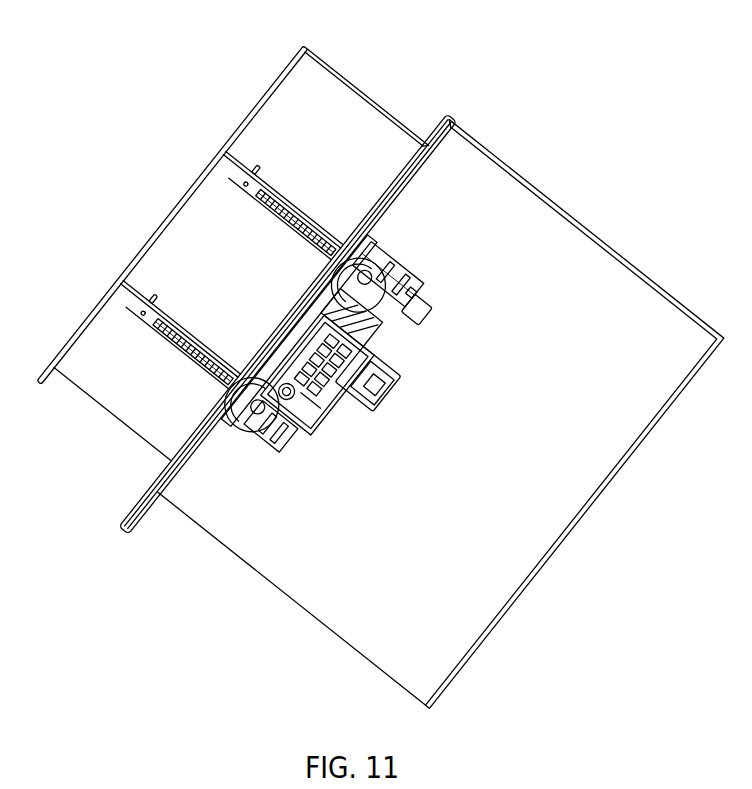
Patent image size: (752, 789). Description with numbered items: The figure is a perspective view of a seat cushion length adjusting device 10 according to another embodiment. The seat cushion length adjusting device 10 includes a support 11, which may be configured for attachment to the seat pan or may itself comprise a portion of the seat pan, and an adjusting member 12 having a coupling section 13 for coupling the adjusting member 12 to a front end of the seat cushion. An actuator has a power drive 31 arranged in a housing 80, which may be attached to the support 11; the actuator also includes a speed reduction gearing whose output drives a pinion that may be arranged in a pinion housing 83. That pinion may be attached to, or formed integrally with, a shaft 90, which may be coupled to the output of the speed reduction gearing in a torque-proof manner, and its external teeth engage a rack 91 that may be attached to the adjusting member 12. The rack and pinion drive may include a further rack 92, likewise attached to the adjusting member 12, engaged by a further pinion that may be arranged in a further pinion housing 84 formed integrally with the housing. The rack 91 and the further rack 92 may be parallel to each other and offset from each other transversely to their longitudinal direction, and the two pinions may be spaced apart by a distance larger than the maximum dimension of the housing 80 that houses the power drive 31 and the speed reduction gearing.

The seat cushion length adjusting device 10 is at (67, 64).
The support 11 is at (230, 542).
The adjusting member 12 is at (72, 370).
The coupling section 13 is at (288, 66).
The power drive 31 is at (337, 383).
The housing 80 is at (326, 418).
The pinion housing 83 is at (243, 427).
The further pinion housing 84 is at (338, 289).
The shaft 90 is at (342, 314).
The rack 91 is at (192, 357).
The further rack 92 is at (304, 216).